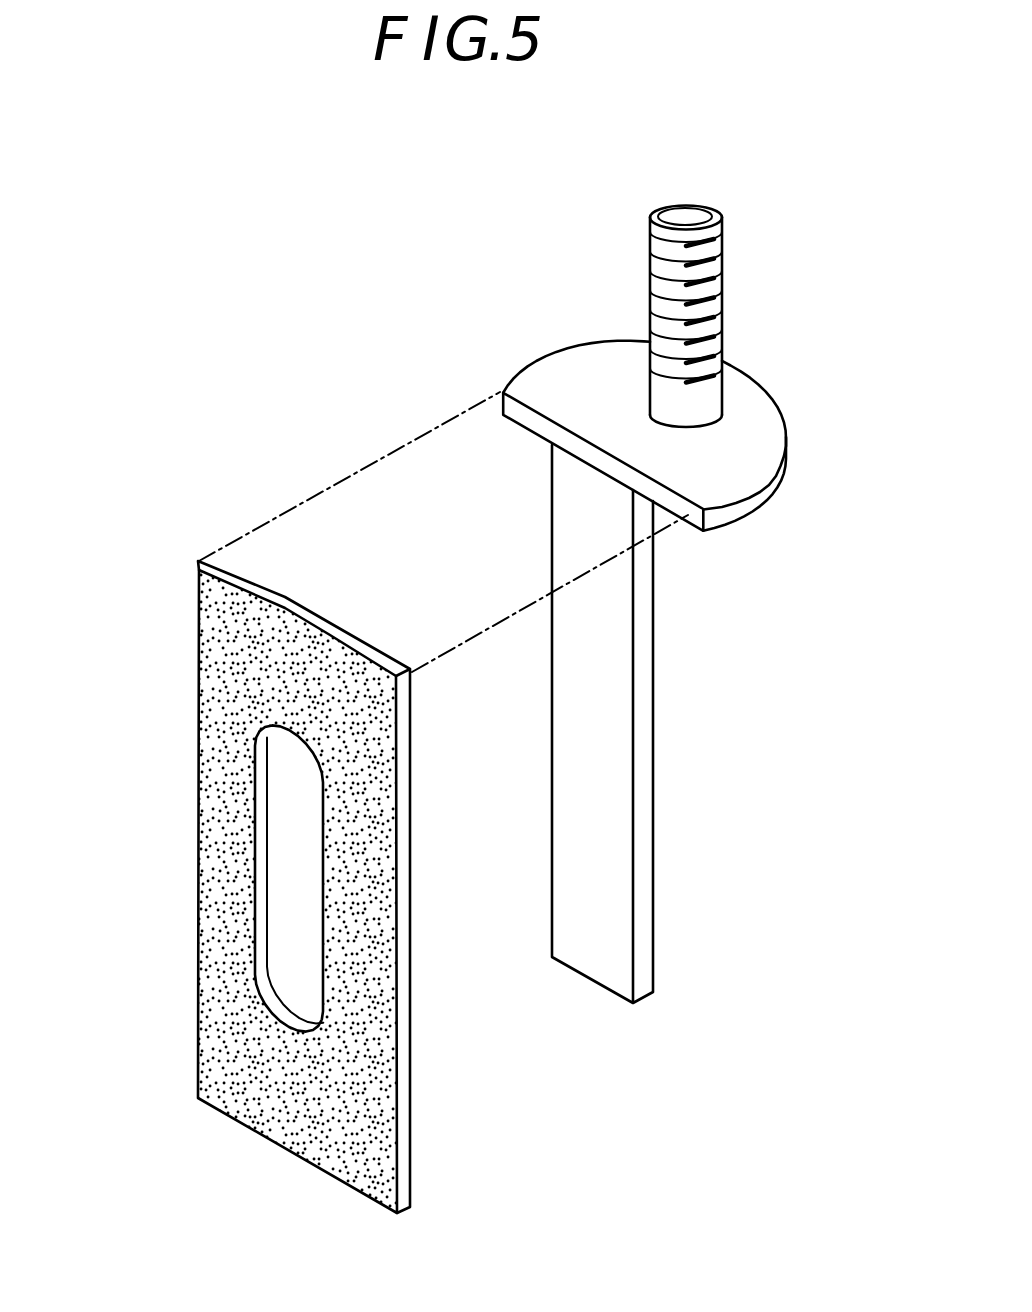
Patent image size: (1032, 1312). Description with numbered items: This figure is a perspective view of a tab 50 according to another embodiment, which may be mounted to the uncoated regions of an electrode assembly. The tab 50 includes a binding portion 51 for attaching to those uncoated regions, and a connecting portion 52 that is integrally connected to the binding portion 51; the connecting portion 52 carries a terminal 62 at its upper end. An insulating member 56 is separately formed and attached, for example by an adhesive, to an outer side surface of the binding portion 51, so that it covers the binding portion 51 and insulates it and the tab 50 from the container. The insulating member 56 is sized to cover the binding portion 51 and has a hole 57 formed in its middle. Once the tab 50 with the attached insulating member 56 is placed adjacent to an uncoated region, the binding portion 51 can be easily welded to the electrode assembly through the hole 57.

The tab 50 is at (420, 362).
The binding portion 51 is at (622, 836).
The connecting portion 52 is at (770, 433).
The insulating member 56 is at (227, 674).
The hole 57 is at (292, 841).
The terminal 62 is at (722, 293).